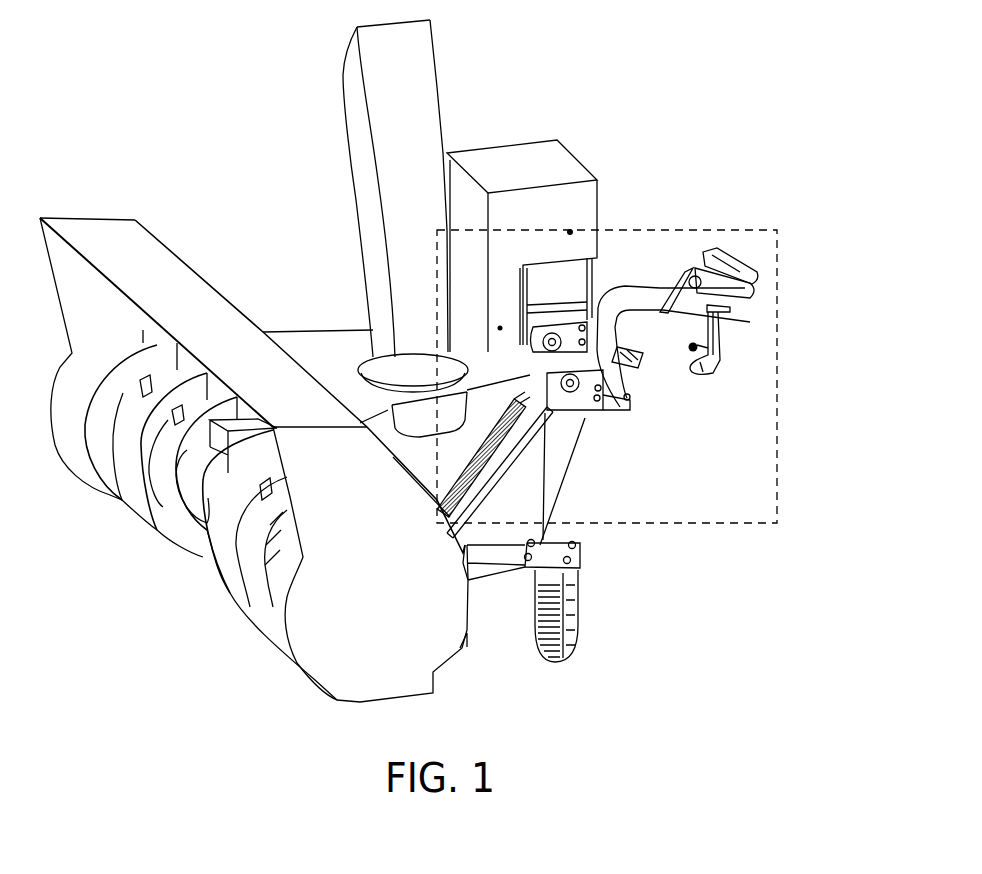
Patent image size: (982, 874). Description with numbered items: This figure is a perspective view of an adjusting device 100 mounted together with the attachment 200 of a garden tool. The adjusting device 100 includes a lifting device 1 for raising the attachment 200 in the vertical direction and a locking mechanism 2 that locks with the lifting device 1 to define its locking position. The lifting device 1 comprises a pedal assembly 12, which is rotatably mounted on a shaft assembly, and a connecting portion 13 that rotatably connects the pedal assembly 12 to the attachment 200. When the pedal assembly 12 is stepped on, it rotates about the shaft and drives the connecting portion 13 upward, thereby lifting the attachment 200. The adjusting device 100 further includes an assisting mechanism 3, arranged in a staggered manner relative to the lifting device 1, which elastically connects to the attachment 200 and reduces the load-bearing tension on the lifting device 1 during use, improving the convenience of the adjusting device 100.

The attachment 200 is at (402, 158).
The adjusting device 100 is at (657, 369).
The lifting device 1 is at (757, 252).
The pedal assembly 12 is at (707, 307).
The locking mechanism 2 is at (740, 372).
The assisting mechanism 3 is at (573, 420).
The connecting portion 13 is at (630, 408).